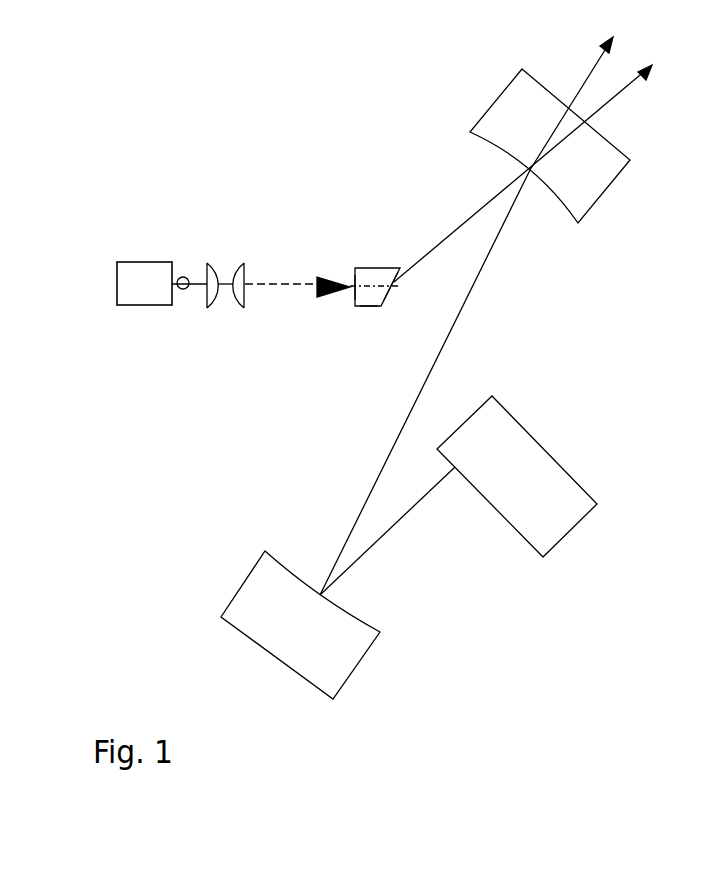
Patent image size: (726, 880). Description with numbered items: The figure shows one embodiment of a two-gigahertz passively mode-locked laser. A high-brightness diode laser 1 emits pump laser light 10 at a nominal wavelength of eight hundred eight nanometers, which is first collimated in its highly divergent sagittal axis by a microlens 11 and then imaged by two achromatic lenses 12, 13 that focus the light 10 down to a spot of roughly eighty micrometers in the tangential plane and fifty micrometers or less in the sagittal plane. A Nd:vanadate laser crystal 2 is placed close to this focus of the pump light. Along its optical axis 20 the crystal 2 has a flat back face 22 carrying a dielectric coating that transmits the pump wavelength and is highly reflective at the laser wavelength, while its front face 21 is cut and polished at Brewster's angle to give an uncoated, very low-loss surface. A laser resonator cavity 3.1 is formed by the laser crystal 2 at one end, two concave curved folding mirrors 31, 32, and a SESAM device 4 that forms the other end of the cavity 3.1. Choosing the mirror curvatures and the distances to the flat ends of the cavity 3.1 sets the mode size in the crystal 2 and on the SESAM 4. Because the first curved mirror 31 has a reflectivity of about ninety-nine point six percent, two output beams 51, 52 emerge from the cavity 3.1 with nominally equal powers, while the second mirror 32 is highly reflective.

The high-brightness diode laser 1 is at (144, 272).
The laser light 10 is at (193, 288).
The microlens 11 is at (184, 290).
The achromatic lens 12 is at (211, 263).
The achromatic lens 13 is at (240, 306).
The laser crystal 2 is at (372, 268).
The optical axis 20 is at (367, 294).
The front face 21 is at (388, 296).
The back face 22 is at (350, 296).
The first curved folding mirror 31 is at (483, 125).
The second curved folding mirror 32 is at (352, 657).
The laser resonator cavity 3.1 is at (547, 308).
The SESAM device 4 is at (568, 487).
The output beam 51 is at (587, 86).
The output beam 52 is at (613, 97).